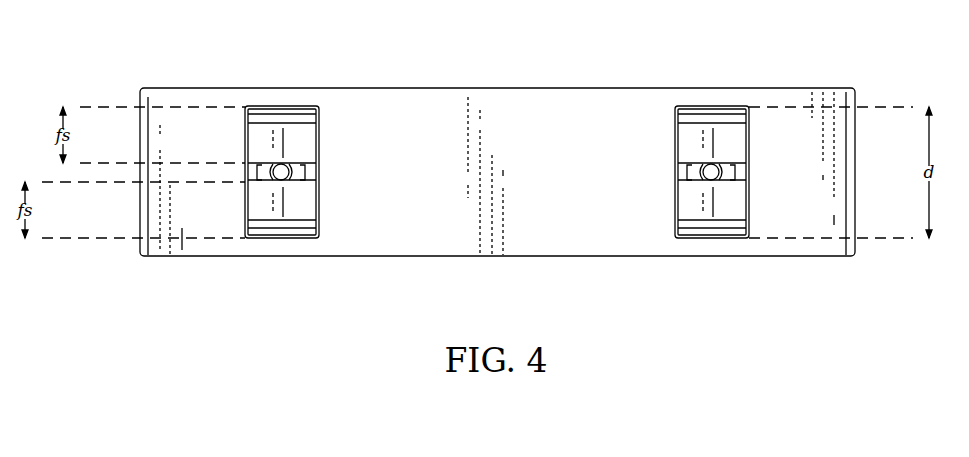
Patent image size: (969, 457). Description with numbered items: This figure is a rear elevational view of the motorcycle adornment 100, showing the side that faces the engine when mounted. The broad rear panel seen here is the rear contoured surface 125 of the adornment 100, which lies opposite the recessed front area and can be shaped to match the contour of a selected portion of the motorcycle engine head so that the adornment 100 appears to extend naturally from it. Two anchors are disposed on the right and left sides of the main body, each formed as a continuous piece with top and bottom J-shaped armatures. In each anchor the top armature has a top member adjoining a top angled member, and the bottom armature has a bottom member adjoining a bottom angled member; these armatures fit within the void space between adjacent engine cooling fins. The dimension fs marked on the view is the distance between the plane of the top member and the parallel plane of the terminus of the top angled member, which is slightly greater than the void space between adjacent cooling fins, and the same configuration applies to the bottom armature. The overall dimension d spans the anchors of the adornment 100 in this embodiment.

The adornment 100 is at (410, 46).
The rear contoured surface 125 is at (603, 189).